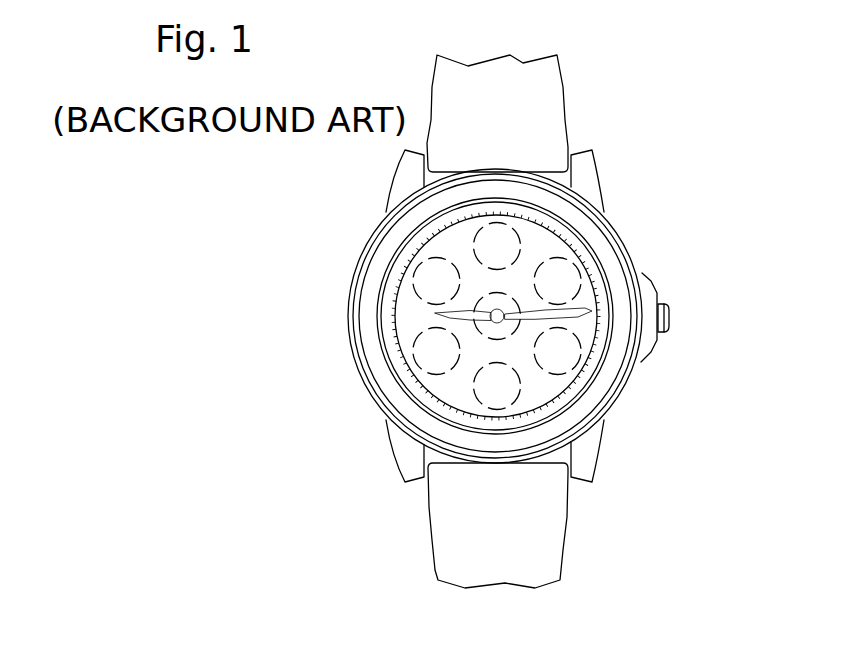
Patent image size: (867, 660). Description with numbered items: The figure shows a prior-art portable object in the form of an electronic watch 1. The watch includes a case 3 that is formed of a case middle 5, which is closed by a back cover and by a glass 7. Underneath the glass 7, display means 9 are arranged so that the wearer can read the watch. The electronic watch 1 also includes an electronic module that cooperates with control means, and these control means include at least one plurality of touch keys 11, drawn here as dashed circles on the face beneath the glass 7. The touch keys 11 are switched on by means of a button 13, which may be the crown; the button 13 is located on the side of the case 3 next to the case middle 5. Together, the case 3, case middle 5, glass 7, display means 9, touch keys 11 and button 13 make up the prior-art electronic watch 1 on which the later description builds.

The electronic watch 1 is at (537, 321).
The case 3 is at (636, 237).
The case middle 5 is at (633, 379).
The glass 7 is at (547, 390).
The display means 9 is at (452, 314).
The touch keys 11 is at (413, 277).
The button 13 is at (670, 320).